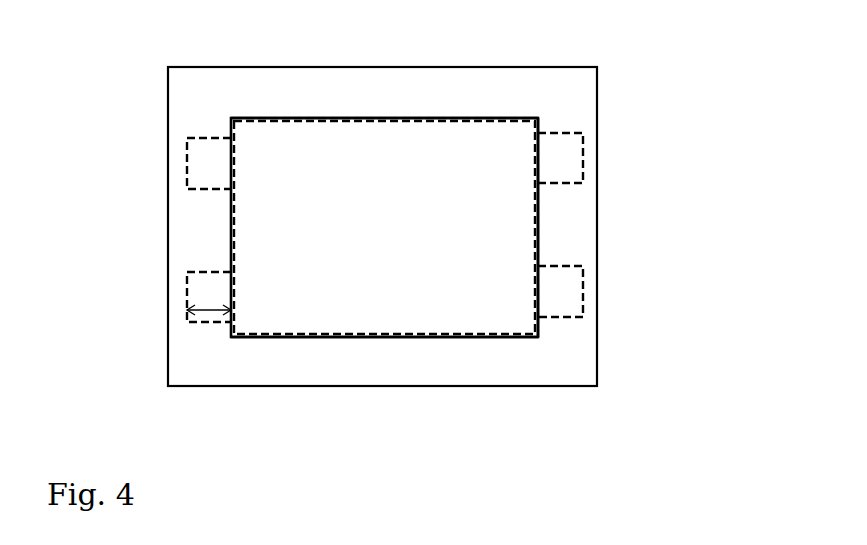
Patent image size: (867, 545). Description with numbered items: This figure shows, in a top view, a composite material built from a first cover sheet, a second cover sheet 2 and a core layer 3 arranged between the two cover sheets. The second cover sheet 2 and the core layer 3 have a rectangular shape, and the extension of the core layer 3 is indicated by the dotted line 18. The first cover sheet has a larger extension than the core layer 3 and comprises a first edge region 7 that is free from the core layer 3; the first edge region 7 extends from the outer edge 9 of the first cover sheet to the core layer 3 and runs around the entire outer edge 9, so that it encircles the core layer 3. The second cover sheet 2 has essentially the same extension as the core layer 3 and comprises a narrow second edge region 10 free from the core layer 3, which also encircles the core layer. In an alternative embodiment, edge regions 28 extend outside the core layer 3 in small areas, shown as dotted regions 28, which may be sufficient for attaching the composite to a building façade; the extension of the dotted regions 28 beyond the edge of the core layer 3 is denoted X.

The second cover sheet 2 is at (538, 118).
The core layer 3 is at (413, 118).
The first edge region 7 is at (582, 321).
The outer edge 9 is at (597, 364).
The second edge region 10 is at (540, 168).
The dotted line 18 is at (333, 118).
The edge regions 28 is at (187, 167).
The extension of the dotted regions X is at (207, 313).